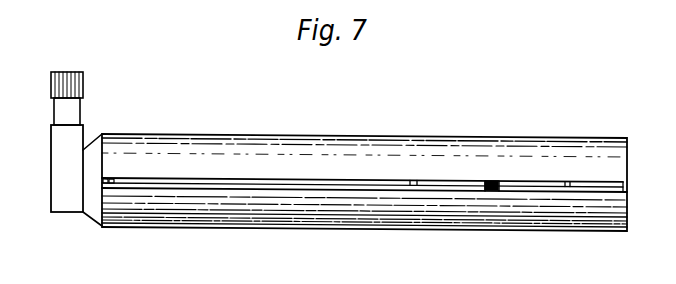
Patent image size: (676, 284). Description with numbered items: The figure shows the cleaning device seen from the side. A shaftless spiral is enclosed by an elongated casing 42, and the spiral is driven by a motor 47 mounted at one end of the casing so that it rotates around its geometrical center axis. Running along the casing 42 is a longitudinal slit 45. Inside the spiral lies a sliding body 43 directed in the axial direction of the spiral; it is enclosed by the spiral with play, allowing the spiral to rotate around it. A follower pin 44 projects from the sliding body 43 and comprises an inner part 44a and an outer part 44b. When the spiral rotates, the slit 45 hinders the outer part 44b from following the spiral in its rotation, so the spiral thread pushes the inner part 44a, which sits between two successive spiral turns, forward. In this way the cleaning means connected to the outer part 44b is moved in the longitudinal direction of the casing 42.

The casing 42 is at (305, 165).
The sliding body 43 is at (447, 183).
The follower pin 44 is at (493, 174).
The inner part of the follower pin 44a is at (489, 188).
The outer part of the follower pin 44b is at (498, 188).
The longitudinal slit 45 is at (203, 180).
The motor 47 is at (70, 140).